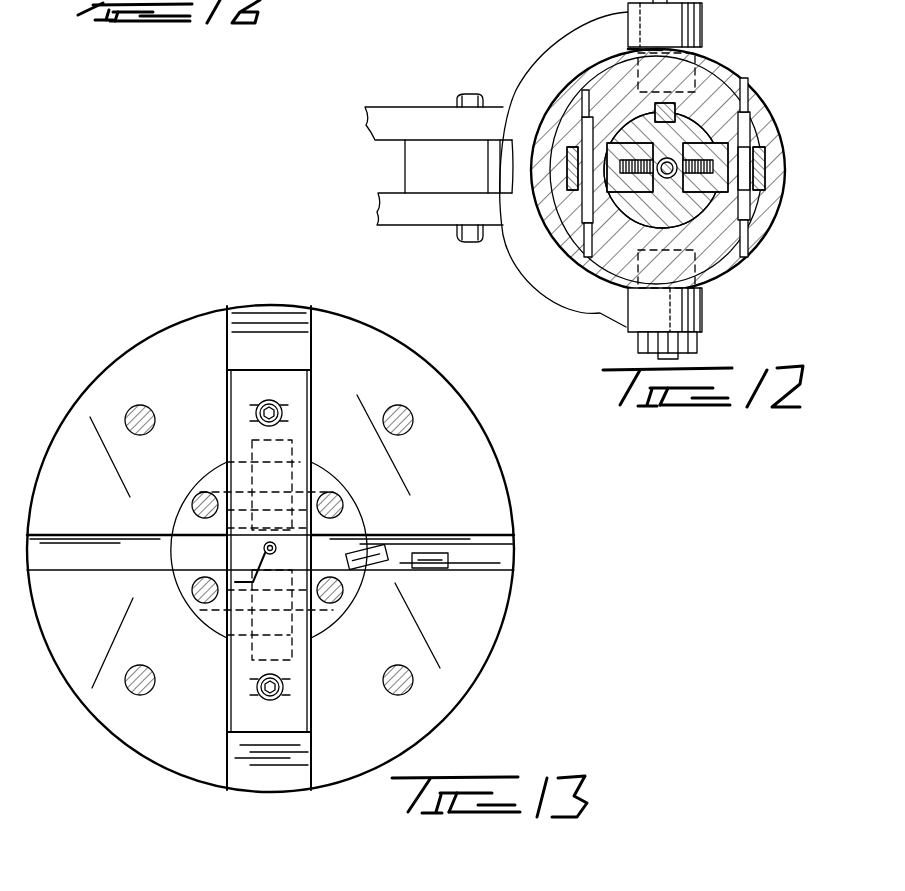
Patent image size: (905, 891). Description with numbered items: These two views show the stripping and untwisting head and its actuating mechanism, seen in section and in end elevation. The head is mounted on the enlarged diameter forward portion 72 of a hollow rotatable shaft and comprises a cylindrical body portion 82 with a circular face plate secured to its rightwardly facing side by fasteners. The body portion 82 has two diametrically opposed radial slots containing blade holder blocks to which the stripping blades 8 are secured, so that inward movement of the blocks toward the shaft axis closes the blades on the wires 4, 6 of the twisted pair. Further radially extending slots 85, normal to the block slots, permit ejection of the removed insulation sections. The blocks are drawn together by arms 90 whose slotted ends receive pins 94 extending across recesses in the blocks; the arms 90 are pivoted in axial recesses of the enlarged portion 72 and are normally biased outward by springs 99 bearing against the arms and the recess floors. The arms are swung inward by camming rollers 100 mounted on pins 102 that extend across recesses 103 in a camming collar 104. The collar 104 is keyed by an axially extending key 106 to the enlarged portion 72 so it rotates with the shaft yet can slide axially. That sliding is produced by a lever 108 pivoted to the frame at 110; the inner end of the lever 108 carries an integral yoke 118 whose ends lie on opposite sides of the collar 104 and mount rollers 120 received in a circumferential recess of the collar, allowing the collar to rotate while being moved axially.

In FIG. 12, the camming collar 104 is at (618, 82).
In FIG. 12, the rollers 120 is at (690, 66).
In FIG. 12, the pivot 110 is at (455, 100).
In FIG. 12, the pins 102 is at (583, 117).
In FIG. 12, the key 106 is at (675, 112).
In FIG. 12, the lever 108 is at (398, 211).
In FIG. 12, the camming rollers 100 is at (566, 192).
In FIG. 12, the recesses 103 is at (752, 167).
In FIG. 12, the springs 99 is at (655, 182).
In FIG. 12, the yoke 118 is at (538, 258).
In FIG. 12, the enlarged diameter forward portion 72 is at (652, 192).
In FIG. 13, the enlarged diameter forward portion 72 is at (185, 527).
In FIG. 13, the cylindrical body portion 82 is at (135, 377).
In FIG. 13, the stripping blade 8 is at (300, 663).
In FIG. 13, the arm 90 is at (258, 632).
In FIG. 13, the pins 94 is at (300, 490).
In FIG. 13, the radially extending slots 85 is at (457, 546).
In FIG. 13, the wire 4 is at (264, 546).
In FIG. 13, the wire 6 is at (278, 556).